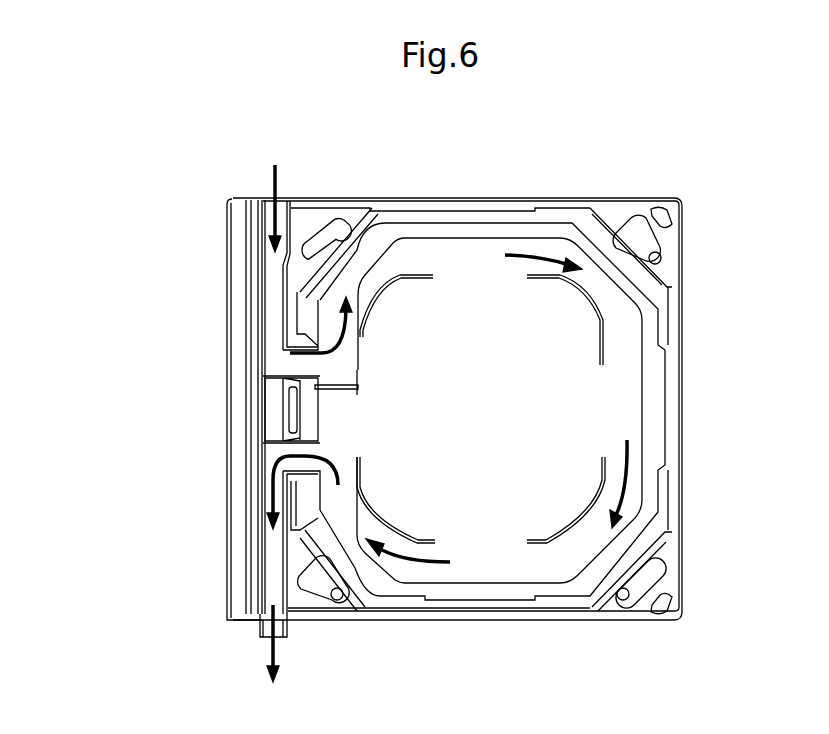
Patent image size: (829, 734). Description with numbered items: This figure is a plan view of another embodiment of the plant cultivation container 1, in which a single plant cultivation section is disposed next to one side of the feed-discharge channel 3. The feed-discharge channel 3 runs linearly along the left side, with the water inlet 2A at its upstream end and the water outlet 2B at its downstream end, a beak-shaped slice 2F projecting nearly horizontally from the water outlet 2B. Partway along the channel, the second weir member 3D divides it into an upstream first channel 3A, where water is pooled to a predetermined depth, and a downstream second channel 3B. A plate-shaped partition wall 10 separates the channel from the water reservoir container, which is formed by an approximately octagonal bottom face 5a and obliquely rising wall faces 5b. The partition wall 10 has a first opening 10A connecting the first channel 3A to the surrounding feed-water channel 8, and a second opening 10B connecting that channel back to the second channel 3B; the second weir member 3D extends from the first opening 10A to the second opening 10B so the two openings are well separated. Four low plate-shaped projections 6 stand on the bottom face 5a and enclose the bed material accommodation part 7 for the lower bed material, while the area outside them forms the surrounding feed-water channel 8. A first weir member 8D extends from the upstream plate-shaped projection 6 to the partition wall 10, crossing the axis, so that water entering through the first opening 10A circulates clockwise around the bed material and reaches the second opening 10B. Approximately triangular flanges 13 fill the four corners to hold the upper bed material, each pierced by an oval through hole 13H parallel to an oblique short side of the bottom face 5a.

The plant cultivation container 1 is at (188, 227).
The water inlet 2A is at (290, 202).
The water outlet 2B is at (285, 640).
The beak-shaped slice 2F is at (258, 621).
The feed-discharge channel 3 is at (268, 304).
The first channel 3A is at (266, 262).
The second channel 3B is at (276, 546).
The second weir member 3D is at (275, 409).
The bottom face 5a is at (572, 400).
The wall face 5b is at (513, 226).
The plate-shaped projection 6 is at (400, 300).
The bed material accommodation part 7 is at (502, 423).
The surrounding feed-water channel 8 is at (405, 272).
The first weir member 8D is at (340, 385).
The partition wall 10 is at (312, 418).
The first opening 10A is at (282, 358).
The second opening 10B is at (315, 455).
The flange 13 is at (360, 210).
The through hole 13H is at (656, 260).